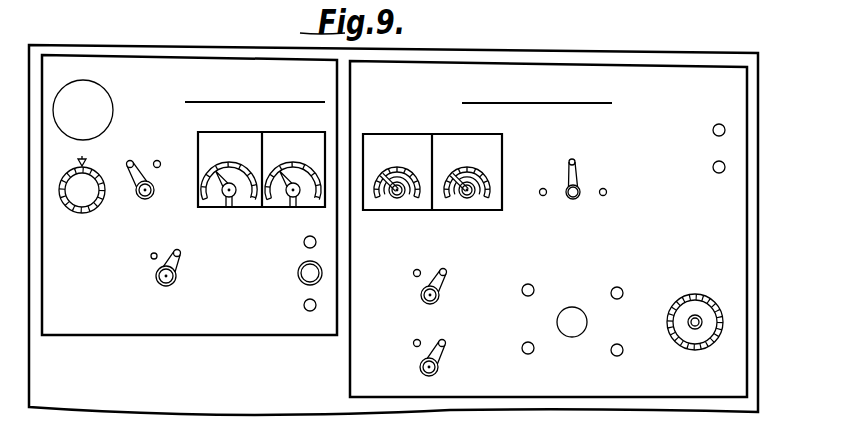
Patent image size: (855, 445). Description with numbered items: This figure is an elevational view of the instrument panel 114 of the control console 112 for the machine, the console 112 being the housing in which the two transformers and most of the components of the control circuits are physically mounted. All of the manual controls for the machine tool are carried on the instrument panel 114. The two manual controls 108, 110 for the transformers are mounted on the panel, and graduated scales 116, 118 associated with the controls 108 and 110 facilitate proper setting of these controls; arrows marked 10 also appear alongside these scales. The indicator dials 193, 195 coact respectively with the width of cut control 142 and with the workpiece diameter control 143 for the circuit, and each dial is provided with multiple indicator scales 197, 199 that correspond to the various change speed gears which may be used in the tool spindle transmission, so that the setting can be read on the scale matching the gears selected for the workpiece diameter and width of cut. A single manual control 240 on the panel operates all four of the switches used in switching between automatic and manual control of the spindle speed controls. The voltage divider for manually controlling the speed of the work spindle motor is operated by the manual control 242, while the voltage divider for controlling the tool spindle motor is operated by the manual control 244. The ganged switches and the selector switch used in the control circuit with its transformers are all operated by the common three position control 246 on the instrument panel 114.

The control console 112 is at (192, 167).
The instrument panel 114 is at (548, 204).
The graduated scale 118 is at (232, 163).
The graduated scale 116 is at (298, 163).
The manual control 110 is at (235, 197).
The manual control 108 is at (299, 197).
The manual control 242 is at (75, 211).
The manual control 240 is at (148, 200).
The section line of FIG. 10 is at (196, 188).
The indicator dial 195 is at (413, 110).
The indicator dial 193 is at (558, 132).
The multiple indicator scales 199 is at (387, 198).
The workpiece diameter control 143 is at (404, 198).
The width of cut control 142 is at (472, 198).
The multiple indicator scales 197 is at (457, 198).
The three position control 246 is at (578, 198).
The manual control 244 is at (680, 328).